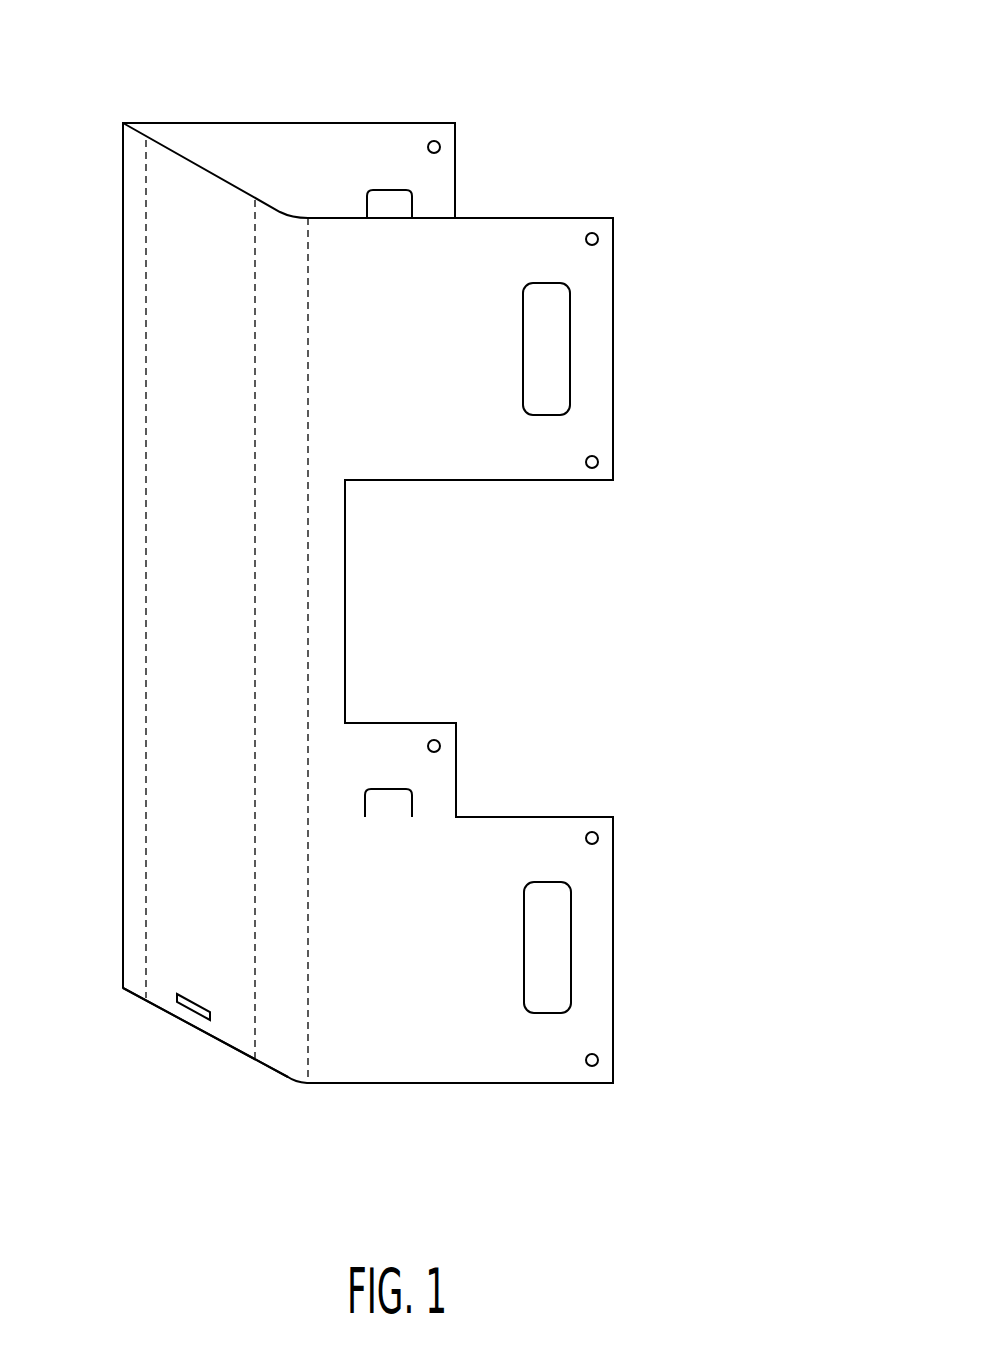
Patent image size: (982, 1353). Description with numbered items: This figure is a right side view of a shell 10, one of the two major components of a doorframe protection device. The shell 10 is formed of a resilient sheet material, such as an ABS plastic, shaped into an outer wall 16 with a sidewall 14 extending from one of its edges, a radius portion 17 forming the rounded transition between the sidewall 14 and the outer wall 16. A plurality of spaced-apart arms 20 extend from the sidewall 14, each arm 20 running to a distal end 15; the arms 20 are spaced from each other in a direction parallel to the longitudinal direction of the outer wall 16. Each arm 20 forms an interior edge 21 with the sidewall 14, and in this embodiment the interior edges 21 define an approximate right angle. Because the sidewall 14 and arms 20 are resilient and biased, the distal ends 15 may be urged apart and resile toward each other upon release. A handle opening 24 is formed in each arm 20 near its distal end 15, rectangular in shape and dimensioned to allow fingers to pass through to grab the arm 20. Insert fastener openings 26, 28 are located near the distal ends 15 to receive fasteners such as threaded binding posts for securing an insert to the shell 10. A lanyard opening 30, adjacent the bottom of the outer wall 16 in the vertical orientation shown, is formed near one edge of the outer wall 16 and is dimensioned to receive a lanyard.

The shell 10 is at (401, 542).
The sidewall 14 is at (345, 615).
The distal end 15 is at (457, 187).
The outer wall 16 is at (211, 599).
The radius portion 17 is at (285, 212).
The arm 20 is at (452, 358).
The interior edge 21 is at (347, 482).
The handle opening 24 is at (543, 415).
The insert fastener opening 26 is at (598, 240).
The insert fastener opening 28 is at (440, 145).
The lanyard opening 30 is at (185, 1007).